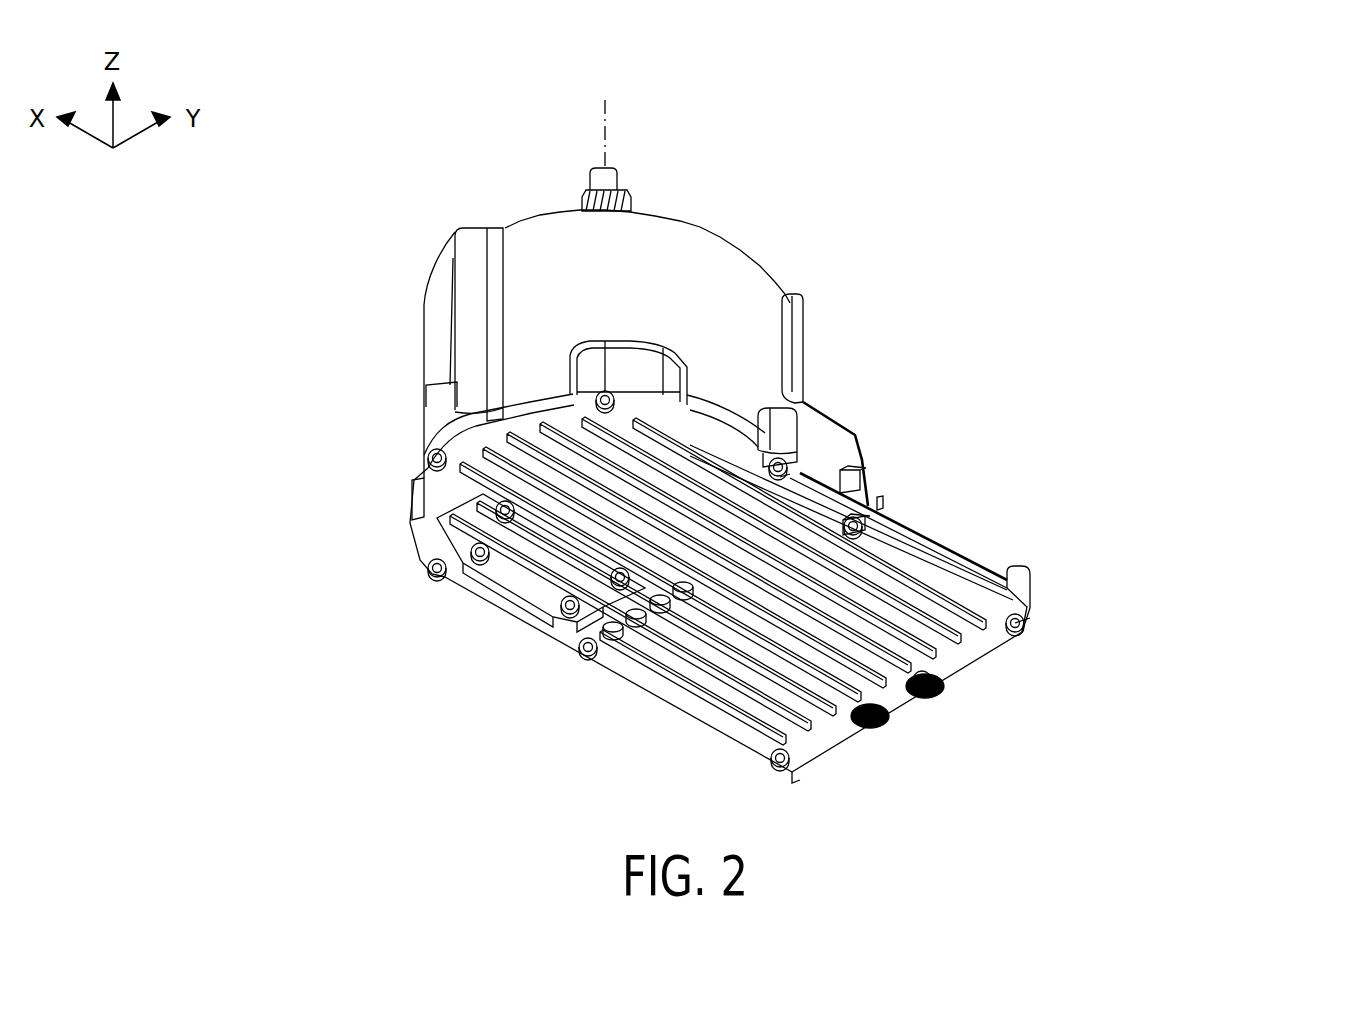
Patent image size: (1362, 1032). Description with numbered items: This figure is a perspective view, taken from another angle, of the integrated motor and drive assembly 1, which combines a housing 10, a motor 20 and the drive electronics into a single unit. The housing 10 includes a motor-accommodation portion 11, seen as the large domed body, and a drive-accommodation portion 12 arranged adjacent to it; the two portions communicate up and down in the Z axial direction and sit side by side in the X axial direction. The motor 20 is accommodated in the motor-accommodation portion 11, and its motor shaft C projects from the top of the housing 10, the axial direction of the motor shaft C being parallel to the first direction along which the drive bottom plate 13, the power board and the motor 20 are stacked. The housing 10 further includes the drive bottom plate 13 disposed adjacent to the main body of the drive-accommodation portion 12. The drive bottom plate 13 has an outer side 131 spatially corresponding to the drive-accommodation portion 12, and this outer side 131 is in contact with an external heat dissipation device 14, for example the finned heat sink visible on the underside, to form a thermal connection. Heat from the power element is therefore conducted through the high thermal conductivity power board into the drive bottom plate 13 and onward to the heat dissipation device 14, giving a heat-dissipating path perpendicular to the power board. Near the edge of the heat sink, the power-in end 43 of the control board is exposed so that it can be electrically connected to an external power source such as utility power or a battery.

The integrated motor and drive assembly 1 is at (1345, 112).
The motor shaft C is at (605, 100).
The housing 10 is at (946, 305).
The motor-accommodation portion 11 is at (735, 290).
The drive-accommodation portion 12 is at (812, 433).
The drive bottom plate 13 is at (443, 430).
The outer side 131 is at (660, 690).
The heat dissipation device 14 is at (963, 621).
The motor 20 is at (600, 186).
The power-in end 43 is at (943, 690).